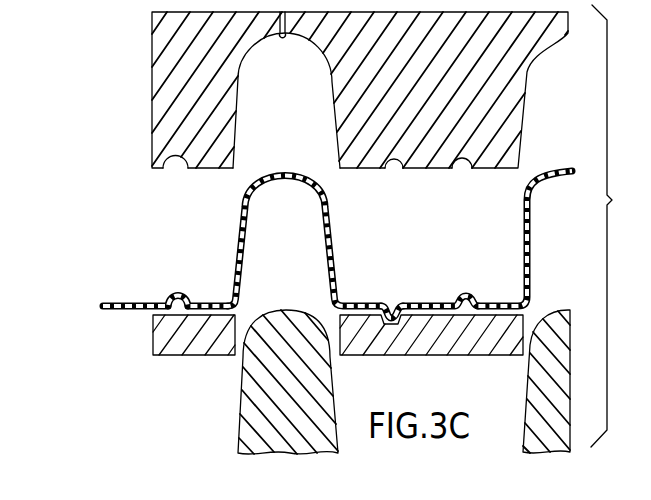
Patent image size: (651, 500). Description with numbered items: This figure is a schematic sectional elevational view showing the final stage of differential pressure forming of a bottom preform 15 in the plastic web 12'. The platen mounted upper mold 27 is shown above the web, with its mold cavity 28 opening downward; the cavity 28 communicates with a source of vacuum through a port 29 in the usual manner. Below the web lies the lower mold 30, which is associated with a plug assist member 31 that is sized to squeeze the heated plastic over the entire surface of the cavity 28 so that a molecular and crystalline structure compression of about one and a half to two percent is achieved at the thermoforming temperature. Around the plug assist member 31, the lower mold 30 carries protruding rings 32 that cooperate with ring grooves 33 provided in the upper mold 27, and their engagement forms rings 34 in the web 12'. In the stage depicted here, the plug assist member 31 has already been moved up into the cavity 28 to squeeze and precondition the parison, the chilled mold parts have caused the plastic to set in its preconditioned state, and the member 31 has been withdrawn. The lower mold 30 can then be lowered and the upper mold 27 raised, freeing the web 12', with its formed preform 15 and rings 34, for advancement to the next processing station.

The upper mold 27 is at (143, 89).
The mold cavity 28 is at (328, 91).
The port 29 is at (276, 37).
The ring groove 33 is at (162, 162).
The web 12' is at (165, 274).
The bottom preform 15 is at (338, 238).
The protruding ring 32 is at (203, 290).
The ring 34 is at (462, 296).
The lower mold 30 is at (214, 392).
The plug assist member 31 is at (313, 390).